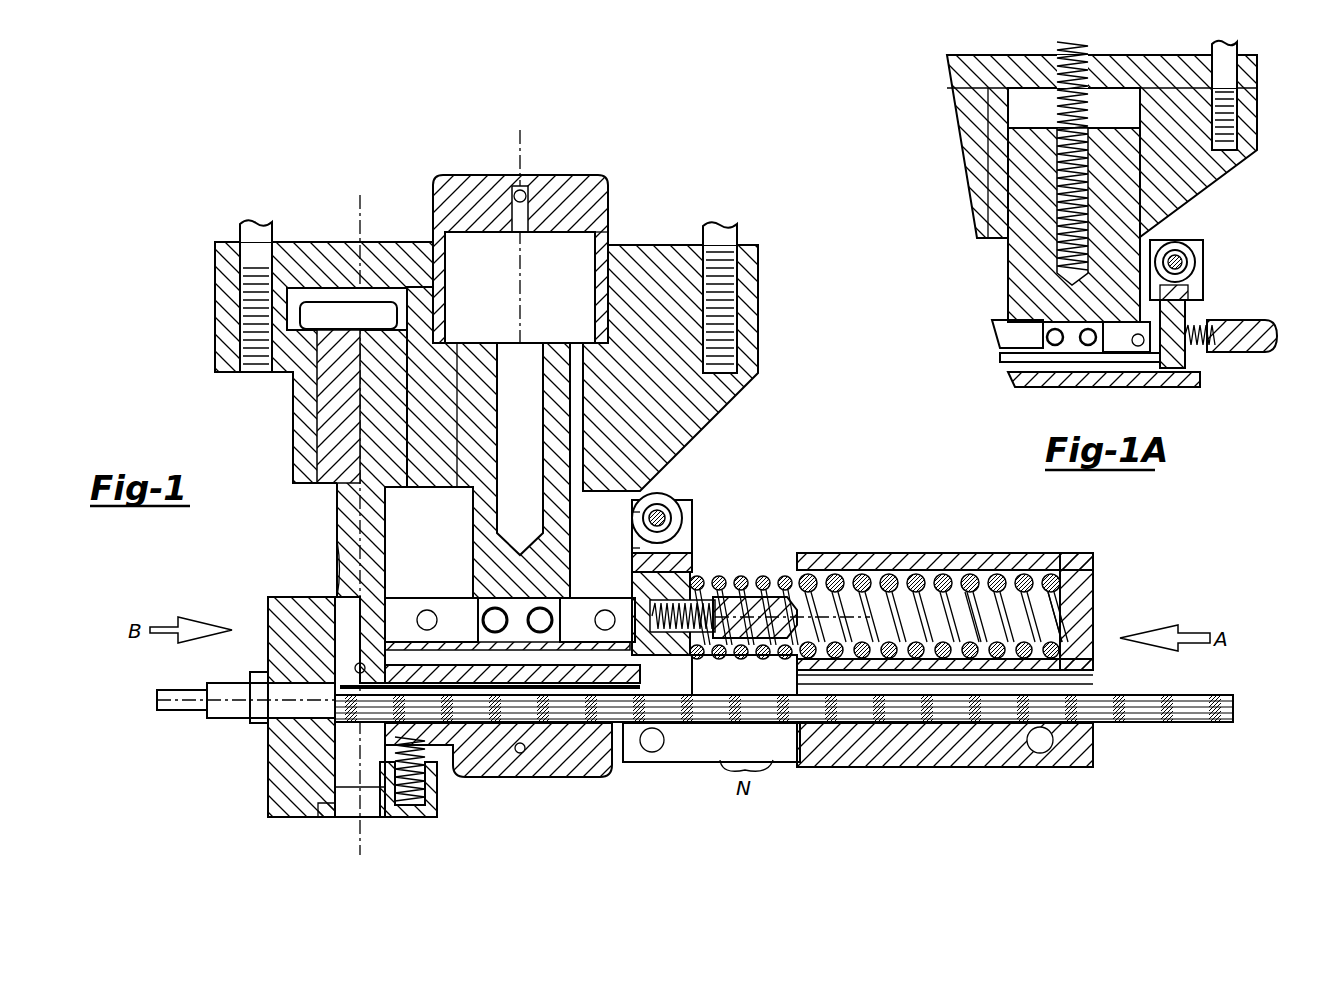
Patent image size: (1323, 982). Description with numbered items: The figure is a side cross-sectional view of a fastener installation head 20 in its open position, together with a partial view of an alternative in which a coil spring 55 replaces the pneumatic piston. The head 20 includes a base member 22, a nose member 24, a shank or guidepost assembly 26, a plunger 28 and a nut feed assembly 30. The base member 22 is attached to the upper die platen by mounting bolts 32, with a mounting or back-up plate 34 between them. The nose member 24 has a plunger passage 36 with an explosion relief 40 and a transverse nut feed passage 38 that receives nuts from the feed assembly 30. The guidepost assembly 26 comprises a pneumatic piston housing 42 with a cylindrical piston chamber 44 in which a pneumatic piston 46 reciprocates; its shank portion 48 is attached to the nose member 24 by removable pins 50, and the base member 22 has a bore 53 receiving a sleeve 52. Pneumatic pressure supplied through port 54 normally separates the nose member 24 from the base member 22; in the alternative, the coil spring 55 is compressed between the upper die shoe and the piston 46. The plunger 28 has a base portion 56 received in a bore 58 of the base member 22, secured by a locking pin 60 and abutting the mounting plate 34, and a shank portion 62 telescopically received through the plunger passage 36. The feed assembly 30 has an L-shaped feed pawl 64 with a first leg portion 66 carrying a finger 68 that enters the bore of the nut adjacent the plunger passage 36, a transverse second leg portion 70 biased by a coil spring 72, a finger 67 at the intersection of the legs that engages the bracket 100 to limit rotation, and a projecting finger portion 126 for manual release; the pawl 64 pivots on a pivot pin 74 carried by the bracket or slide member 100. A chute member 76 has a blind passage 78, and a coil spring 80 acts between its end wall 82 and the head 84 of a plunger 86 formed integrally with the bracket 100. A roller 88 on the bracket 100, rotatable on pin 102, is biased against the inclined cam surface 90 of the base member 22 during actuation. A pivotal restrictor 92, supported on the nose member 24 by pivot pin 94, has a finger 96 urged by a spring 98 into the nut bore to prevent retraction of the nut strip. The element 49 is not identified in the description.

In FIG. 1, the fastener installation head 20 is at (292, 150).
In FIG. 1, the base member 22 is at (700, 413).
In FIG. 1A, the base member 22 is at (1195, 205).
In FIG. 1, the nose member 24 is at (276, 770).
In FIG. 1, the shank or guidepost assembly 26 is at (585, 170).
In FIG. 1, the plunger 28 is at (350, 504).
In FIG. 1, the nut feed assembly 30 is at (865, 608).
In FIG. 1A, the nut feed assembly 30 is at (1226, 288).
In FIG. 1, the mounting bolts 32 is at (250, 230).
In FIG. 1, the mounting or back-up plate 34 is at (218, 270).
In FIG. 1A, the mounting or back-up plate 34 is at (1150, 58).
In FIG. 1, the plunger passage 36 is at (340, 600).
In FIG. 1, the transverse nut feed passage 38 is at (570, 722).
In FIG. 1, the explosion relief 40 is at (330, 818).
In FIG. 1, the pneumatic piston housing 42 is at (462, 178).
In FIG. 1, the cylindrical piston chamber 44 is at (572, 272).
In FIG. 1, the pneumatic piston 46 is at (485, 345).
In FIG. 1A, the pneumatic piston 46 is at (1010, 268).
In FIG. 1, the shank portion 48 is at (478, 535).
In FIG. 1, the seat 49 is at (478, 597).
In FIG. 1, the removable pins 50 is at (548, 614).
In FIG. 1A, the removable pins 50 is at (990, 335).
In FIG. 1, the sleeve 52 is at (555, 432).
In FIG. 1, the bore 53 is at (465, 472).
In FIG. 1, the pneumatic port 54 is at (525, 188).
In FIG. 1A, the coil spring 55 is at (1060, 70).
In FIG. 1, the base portion 56 is at (325, 402).
In FIG. 1, the bore 58 is at (330, 438).
In FIG. 1, the locking pin 60 is at (335, 310).
In FIG. 1, the shank portion 62 is at (385, 552).
In FIG. 1, the L-shaped feed pawl 64 is at (512, 680).
In FIG. 1A, the L-shaped feed pawl 64 is at (1135, 387).
In FIG. 1, the first leg portion 66 is at (425, 648).
In FIG. 1, the finger 67 is at (690, 712).
In FIG. 1, the finger 68 is at (335, 697).
In FIG. 1, the second leg portion 70 is at (632, 600).
In FIG. 1, the coil spring 72 is at (720, 598).
In FIG. 1A, the coil spring 72 is at (1220, 348).
In FIG. 1, the pivot pin 74 is at (665, 672).
In FIG. 1, the chute member 76 is at (975, 573).
In FIG. 1, the blind opening or passage 78 is at (1045, 578).
In FIG. 1, the coil spring 80 is at (900, 575).
In FIG. 1, the end wall 82 is at (1085, 585).
In FIG. 1, the head 84 is at (690, 570).
In FIG. 1, the plunger 86 is at (775, 580).
In FIG. 1A, the plunger 86 is at (1262, 318).
In FIG. 1, the roller 88 is at (660, 495).
In FIG. 1A, the roller 88 is at (1185, 246).
In FIG. 1, the inclined cam surface 90 is at (704, 412).
In FIG. 1, the pivotal restrictor 92 is at (595, 777).
In FIG. 1, the pivot pin 94 is at (520, 752).
In FIG. 1, the finger 96 is at (385, 710).
In FIG. 1, the spring 98 is at (410, 810).
In FIG. 1, the bracket or slide member 100 is at (692, 510).
In FIG. 1, the pin 102 is at (638, 514).
In FIG. 1, the projecting finger portion 126 is at (640, 553).